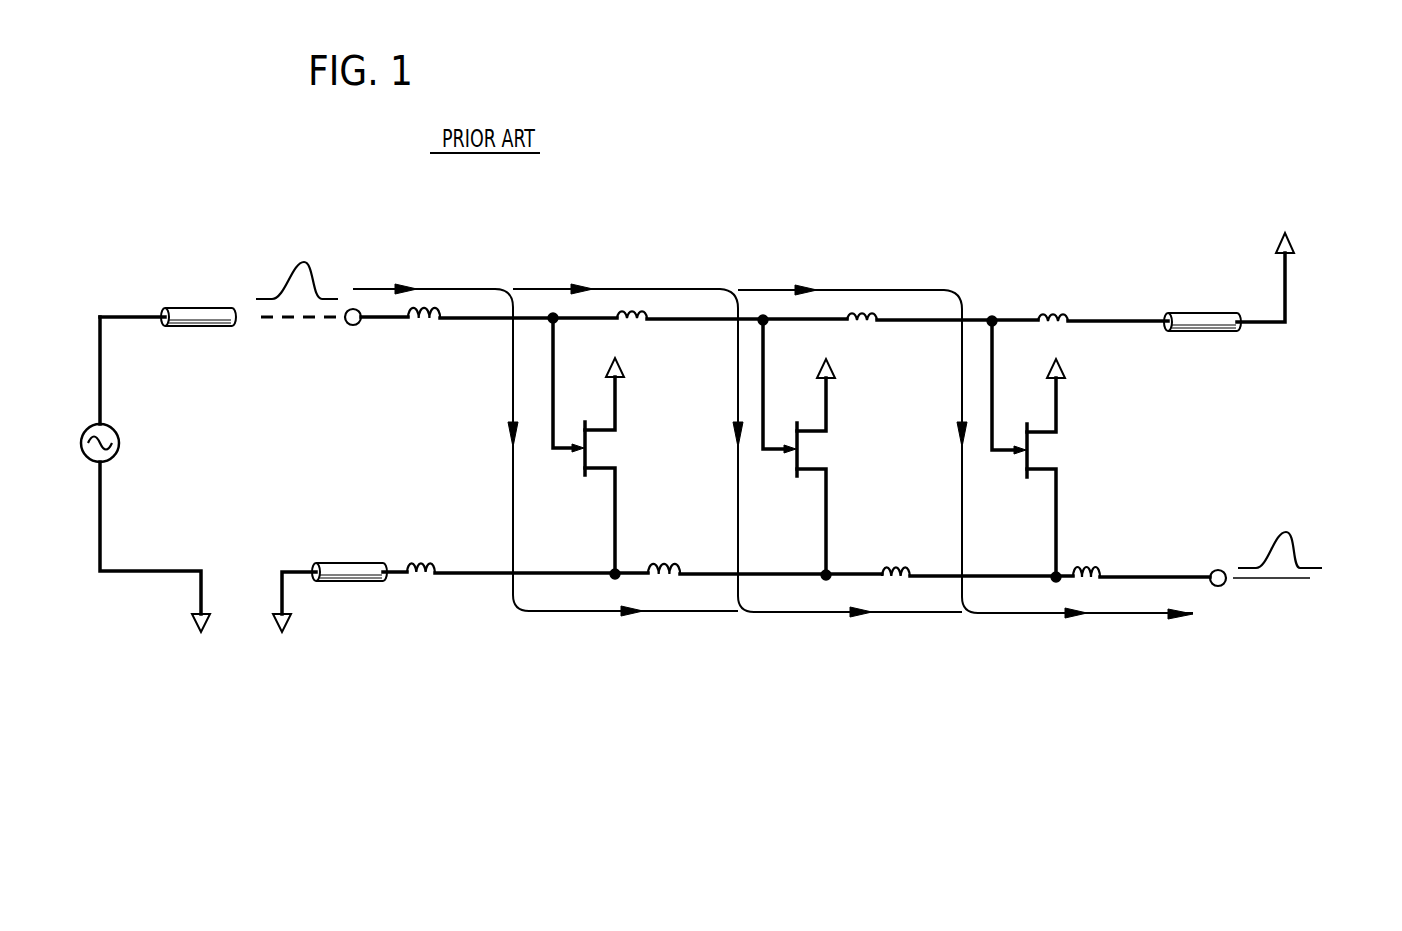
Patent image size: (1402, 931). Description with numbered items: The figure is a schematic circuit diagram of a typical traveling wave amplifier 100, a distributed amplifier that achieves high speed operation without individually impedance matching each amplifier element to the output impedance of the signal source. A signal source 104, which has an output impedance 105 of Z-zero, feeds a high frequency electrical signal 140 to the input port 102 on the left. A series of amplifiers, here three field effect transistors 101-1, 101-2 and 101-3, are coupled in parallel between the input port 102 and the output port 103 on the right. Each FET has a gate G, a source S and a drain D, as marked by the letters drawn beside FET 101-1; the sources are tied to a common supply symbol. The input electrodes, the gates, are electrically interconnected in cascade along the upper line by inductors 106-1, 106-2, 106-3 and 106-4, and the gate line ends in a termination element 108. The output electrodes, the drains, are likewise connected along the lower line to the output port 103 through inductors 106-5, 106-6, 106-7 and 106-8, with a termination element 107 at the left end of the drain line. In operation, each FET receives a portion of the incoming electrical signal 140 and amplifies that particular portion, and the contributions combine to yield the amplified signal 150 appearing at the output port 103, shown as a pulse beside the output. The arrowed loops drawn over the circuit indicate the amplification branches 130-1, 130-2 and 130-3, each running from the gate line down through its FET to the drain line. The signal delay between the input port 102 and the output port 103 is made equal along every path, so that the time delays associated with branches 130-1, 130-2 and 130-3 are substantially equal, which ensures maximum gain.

The traveling wave amplifier 100 is at (650, 230).
The input port 102 is at (340, 326).
The output port 103 is at (1226, 583).
The signal source 104 is at (120, 432).
The output impedance 105 is at (182, 305).
The drain line termination transmission line 107 is at (332, 560).
The gate line termination transmission line 108 is at (1192, 309).
The inductor 106-1 is at (438, 326).
The inductor 106-2 is at (641, 328).
The inductor 106-3 is at (872, 330).
The inductor 106-4 is at (1057, 308).
The inductor 106-5 is at (460, 528).
The inductor 106-6 is at (696, 535).
The inductor 106-7 is at (890, 562).
The inductor 106-8 is at (1098, 566).
The field effect transistor 101-1 is at (576, 466).
The field effect transistor 101-2 is at (795, 457).
The field effect transistor 101-3 is at (1027, 467).
The amplification branch 130-1 is at (545, 432).
The amplification branch 130-2 is at (737, 432).
The amplification branch 130-3 is at (965, 436).
The high frequency electrical signal 140 is at (304, 262).
The amplified signal 150 is at (1288, 531).